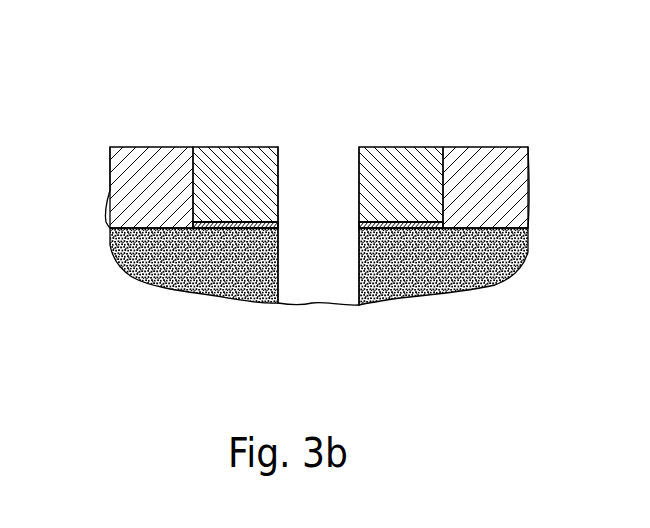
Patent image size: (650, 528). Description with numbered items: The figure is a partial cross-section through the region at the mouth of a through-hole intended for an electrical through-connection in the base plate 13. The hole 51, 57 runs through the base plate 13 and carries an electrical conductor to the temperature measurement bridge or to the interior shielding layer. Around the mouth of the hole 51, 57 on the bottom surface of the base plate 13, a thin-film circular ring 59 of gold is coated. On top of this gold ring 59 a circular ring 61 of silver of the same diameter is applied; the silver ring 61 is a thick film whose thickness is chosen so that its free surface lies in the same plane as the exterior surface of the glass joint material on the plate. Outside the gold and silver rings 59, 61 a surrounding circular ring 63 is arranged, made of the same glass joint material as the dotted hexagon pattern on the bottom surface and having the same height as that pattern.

The base plate 13 is at (482, 260).
The hole 51 is at (309, 178).
The hole 57 is at (323, 172).
The circular ring of gold 59 is at (398, 230).
The circular ring of silver 61 is at (252, 180).
The surrounding circular ring 63 is at (158, 183).